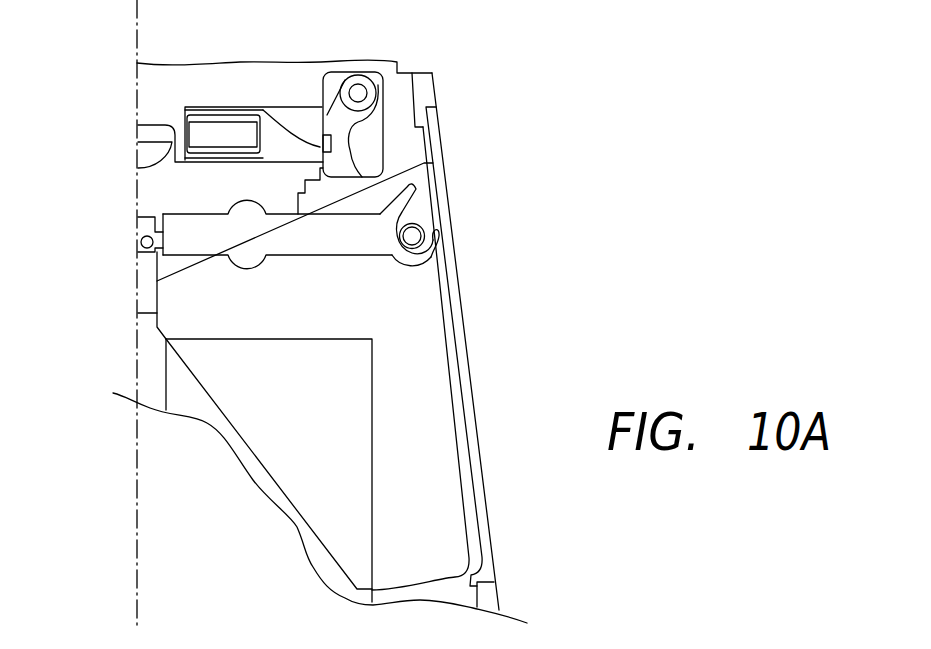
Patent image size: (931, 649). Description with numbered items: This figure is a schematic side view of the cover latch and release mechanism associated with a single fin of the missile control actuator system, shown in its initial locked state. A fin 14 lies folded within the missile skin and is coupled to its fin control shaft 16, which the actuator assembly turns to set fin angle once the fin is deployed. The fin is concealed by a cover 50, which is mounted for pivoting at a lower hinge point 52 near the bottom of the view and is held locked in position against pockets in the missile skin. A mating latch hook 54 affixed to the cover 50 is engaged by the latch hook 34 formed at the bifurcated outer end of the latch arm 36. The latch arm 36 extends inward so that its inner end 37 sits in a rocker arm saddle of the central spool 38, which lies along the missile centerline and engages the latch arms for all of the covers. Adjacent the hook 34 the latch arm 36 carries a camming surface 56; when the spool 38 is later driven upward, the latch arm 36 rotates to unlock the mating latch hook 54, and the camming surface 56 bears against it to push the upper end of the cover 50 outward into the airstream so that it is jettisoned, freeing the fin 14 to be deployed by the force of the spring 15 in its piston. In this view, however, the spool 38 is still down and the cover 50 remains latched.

The fin 14 is at (427, 348).
The spring 15 is at (238, 62).
The fin control shaft 16 is at (240, 166).
The latch hook 34 is at (410, 267).
The latch arm 36 is at (305, 257).
The inner end of latch arm 37 is at (137, 243).
The central spool 38 is at (143, 277).
The cover 50 is at (476, 404).
The lower hinge point 52 is at (495, 591).
The mating latch hook 54 is at (416, 236).
The camming surface 56 is at (431, 226).